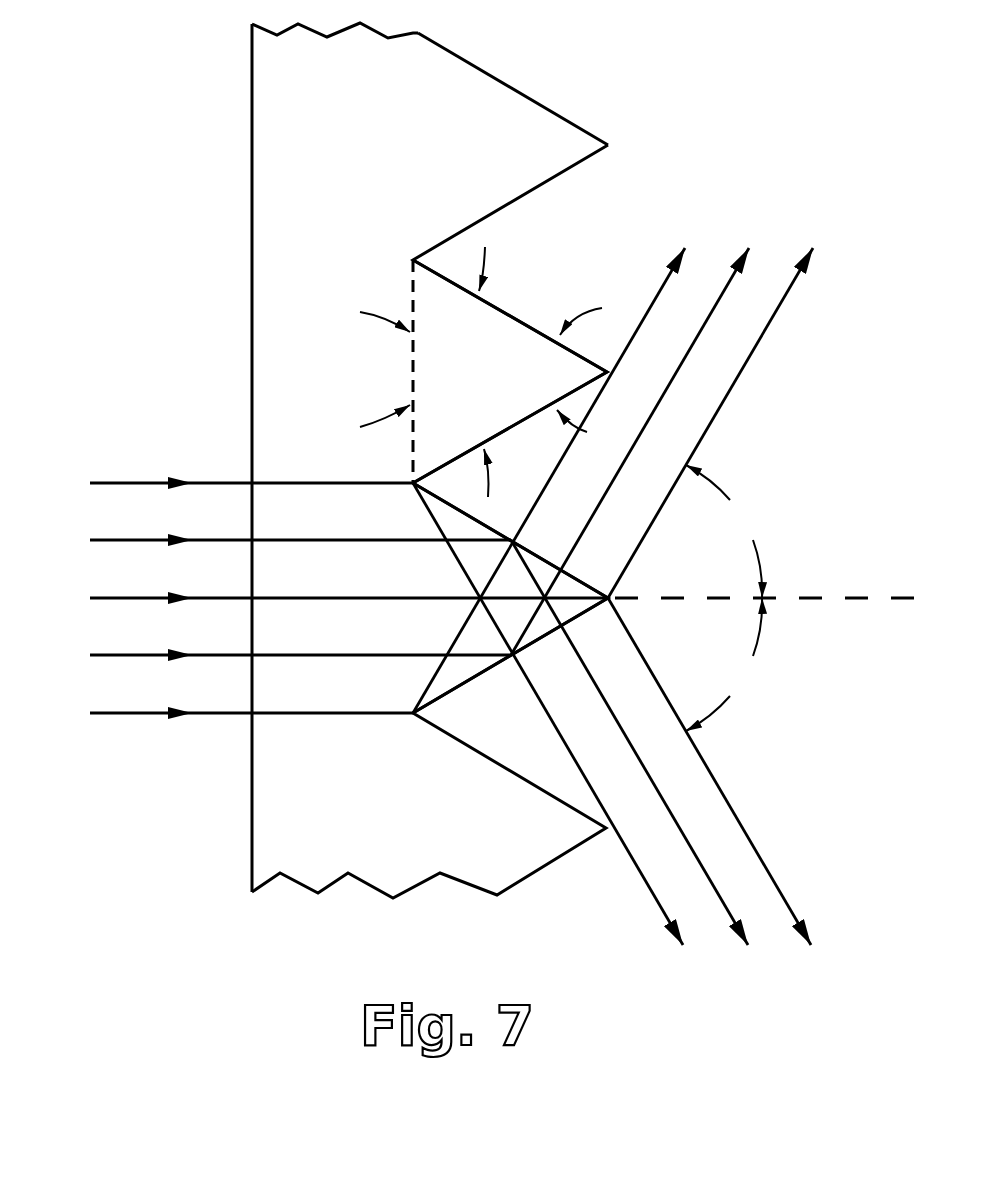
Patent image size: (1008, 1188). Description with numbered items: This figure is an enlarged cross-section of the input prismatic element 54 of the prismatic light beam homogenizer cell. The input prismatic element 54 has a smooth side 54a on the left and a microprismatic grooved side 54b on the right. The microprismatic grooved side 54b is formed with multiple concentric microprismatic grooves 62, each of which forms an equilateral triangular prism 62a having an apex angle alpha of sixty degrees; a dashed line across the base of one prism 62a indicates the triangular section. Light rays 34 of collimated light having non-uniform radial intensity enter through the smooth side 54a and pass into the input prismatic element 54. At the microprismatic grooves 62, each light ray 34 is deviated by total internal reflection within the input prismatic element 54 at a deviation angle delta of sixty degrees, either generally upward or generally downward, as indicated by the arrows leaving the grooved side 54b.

The input prismatic element 54 is at (400, 460).
The smooth side 54a is at (251, 108).
The microprismatic grooved side 54b is at (477, 65).
The equilateral triangular prism 62a is at (505, 395).
The microprismatic groove 62 is at (580, 578).
The light ray 34 is at (135, 483).